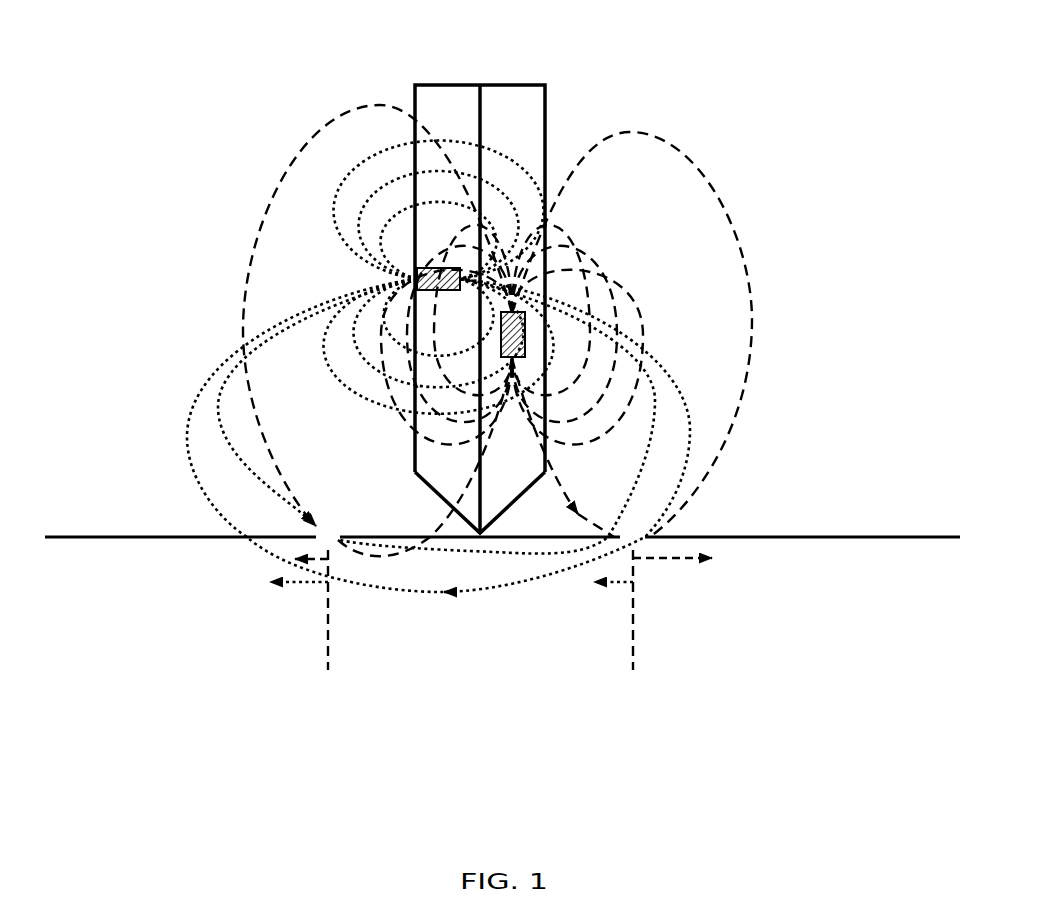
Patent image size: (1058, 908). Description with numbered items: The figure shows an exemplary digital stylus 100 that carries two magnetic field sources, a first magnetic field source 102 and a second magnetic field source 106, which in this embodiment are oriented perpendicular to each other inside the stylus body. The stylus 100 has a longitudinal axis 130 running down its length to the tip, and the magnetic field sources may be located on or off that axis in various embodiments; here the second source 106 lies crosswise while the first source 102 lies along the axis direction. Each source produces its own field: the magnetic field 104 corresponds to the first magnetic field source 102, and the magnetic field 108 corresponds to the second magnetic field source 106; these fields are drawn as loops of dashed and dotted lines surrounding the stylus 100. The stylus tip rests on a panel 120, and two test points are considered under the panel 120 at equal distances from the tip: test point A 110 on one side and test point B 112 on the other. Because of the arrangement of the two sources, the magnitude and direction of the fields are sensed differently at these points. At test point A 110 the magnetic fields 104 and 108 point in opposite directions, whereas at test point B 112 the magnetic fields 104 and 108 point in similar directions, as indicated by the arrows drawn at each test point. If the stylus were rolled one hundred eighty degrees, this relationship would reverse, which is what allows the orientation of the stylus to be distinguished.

The stylus 100 is at (534, 85).
The first magnetic field source 102 is at (516, 326).
The magnetic field 104 is at (755, 332).
The second magnetic field source 106 is at (436, 268).
The magnetic field 108 is at (297, 305).
The test point A 110 is at (639, 548).
The test point B 112 is at (335, 548).
The panel 120 is at (822, 536).
The longitudinal axis 130 is at (478, 490).